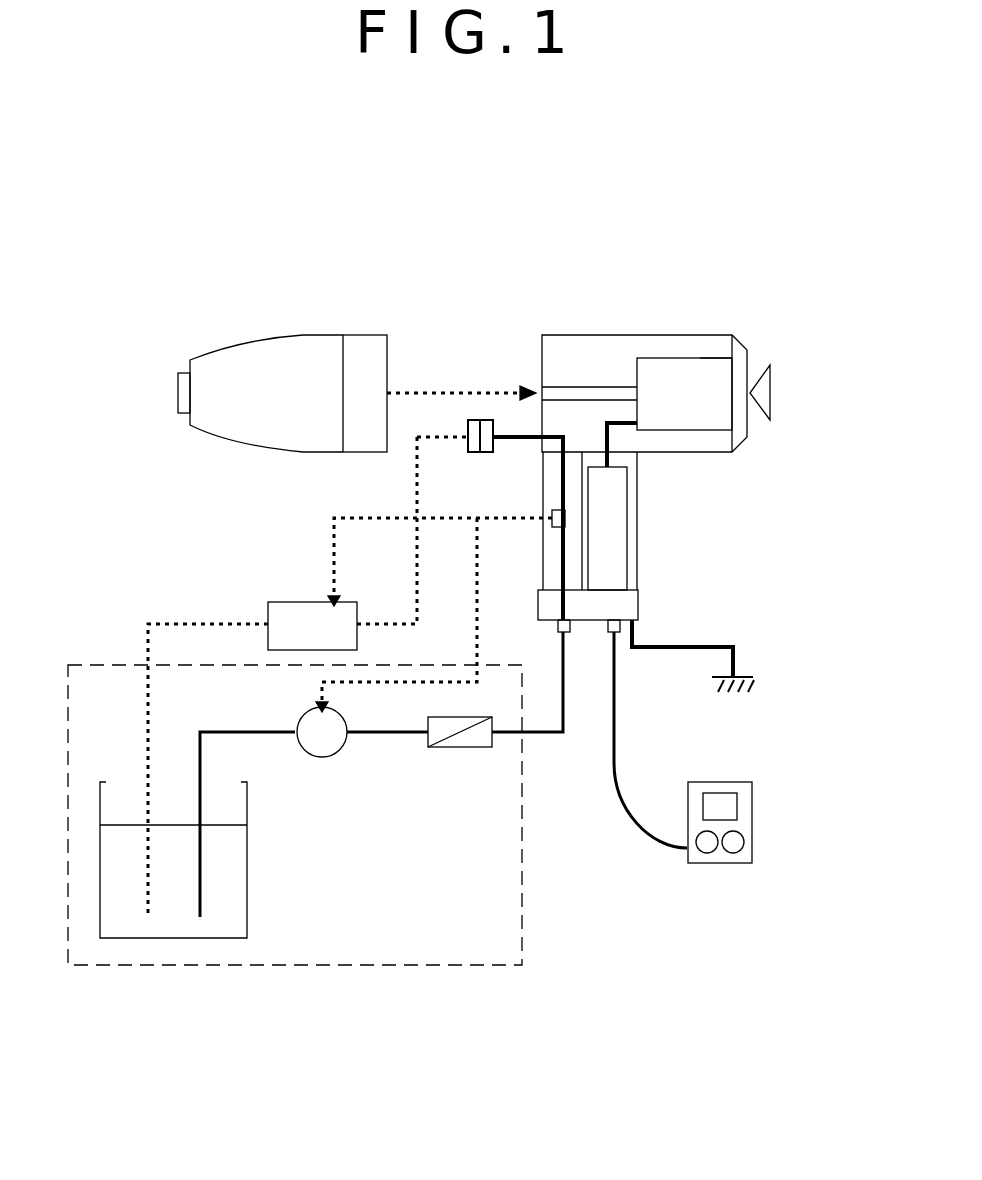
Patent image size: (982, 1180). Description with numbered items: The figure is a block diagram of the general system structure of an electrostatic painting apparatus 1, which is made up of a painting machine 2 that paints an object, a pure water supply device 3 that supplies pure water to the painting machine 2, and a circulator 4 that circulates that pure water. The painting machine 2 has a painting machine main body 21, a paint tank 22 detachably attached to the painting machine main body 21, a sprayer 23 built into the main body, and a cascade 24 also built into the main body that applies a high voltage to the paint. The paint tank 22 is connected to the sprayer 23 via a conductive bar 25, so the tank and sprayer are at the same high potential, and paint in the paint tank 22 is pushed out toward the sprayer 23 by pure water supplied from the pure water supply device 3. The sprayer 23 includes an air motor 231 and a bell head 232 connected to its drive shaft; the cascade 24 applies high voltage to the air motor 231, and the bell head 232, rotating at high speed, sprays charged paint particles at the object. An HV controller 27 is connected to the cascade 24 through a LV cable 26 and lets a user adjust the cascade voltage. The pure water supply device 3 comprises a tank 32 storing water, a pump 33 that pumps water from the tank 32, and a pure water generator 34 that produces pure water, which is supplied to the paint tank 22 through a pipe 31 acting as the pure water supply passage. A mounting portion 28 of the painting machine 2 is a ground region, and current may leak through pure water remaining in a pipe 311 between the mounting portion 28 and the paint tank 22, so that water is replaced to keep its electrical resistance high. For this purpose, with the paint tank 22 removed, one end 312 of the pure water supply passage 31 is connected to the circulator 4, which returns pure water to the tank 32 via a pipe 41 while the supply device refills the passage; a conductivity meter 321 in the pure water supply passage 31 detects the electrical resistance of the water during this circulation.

The electrostatic painting apparatus 1 is at (790, 196).
The painting machine 2 is at (593, 335).
The painting machine main body 21 is at (635, 335).
The paint tank 22 is at (360, 340).
The sprayer 23 is at (683, 358).
The air motor 231 is at (714, 358).
The bell head 232 is at (765, 398).
The cascade 24 is at (620, 512).
The conductive bar 25 is at (553, 390).
The LV cable 26 is at (617, 705).
The HV controller 27 is at (752, 818).
The mounting portion 28 is at (638, 603).
The pure water supply device 3 is at (525, 880).
The pipe 31 is at (565, 465).
The pipe 311 is at (565, 492).
The one end of the pure water supply passage 312 is at (482, 420).
The conductivity meter 321 is at (552, 528).
The tank 32 is at (247, 865).
The pump 33 is at (322, 757).
The pure water generator 34 is at (450, 747).
The circulator 4 is at (280, 602).
The pipe 41 is at (415, 481).